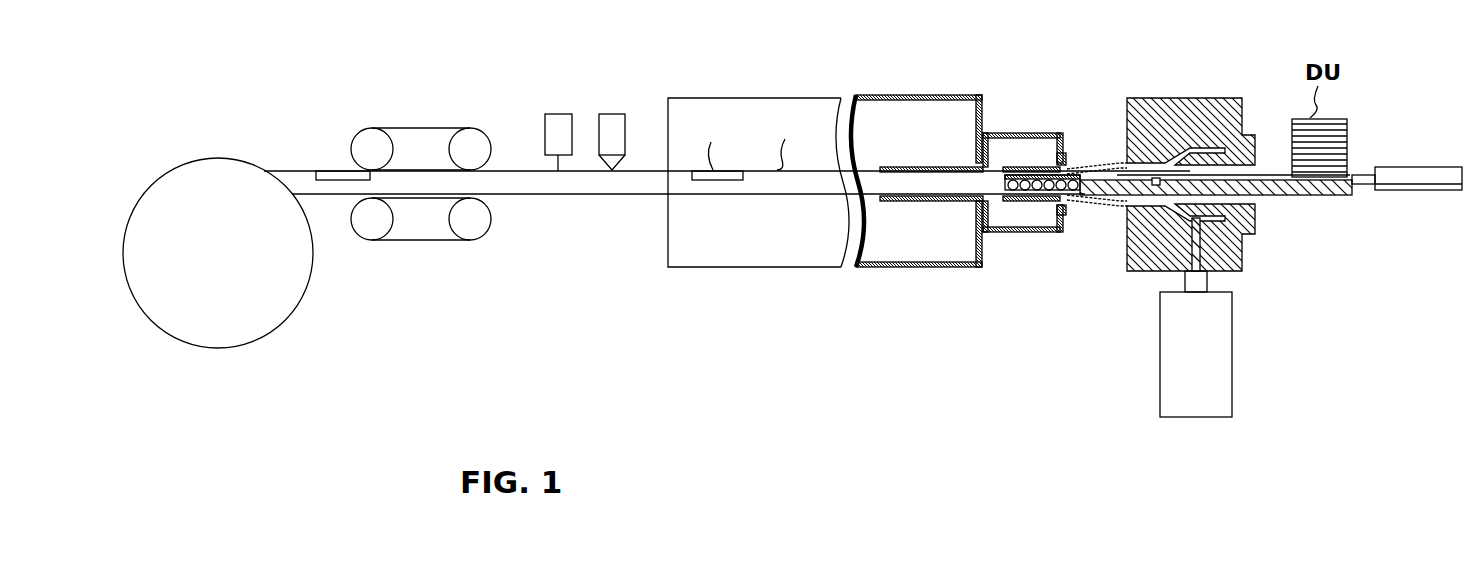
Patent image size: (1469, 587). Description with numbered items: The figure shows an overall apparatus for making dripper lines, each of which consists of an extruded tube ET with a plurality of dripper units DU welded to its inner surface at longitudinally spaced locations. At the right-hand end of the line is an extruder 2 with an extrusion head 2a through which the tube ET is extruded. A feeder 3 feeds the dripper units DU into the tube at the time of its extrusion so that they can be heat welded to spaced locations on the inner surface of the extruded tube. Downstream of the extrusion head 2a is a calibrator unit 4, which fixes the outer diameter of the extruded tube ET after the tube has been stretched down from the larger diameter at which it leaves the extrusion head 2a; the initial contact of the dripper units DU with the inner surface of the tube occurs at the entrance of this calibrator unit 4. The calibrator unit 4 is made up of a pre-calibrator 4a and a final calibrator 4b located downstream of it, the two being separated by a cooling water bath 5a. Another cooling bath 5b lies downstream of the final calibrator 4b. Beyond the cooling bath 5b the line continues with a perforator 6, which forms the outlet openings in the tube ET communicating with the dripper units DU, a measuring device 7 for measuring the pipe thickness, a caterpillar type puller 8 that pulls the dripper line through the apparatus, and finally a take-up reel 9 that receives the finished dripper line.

The extruder 2 is at (1232, 352).
The extrusion head 2a is at (1212, 98).
The feeder 3 is at (1430, 191).
The calibrator unit 4 is at (978, 144).
The pre-calibrator 4a is at (1067, 152).
The final calibrator 4b is at (987, 147).
The cooling water bath 5a is at (998, 215).
The cooling bath 5b is at (782, 98).
The perforator 6 is at (615, 113).
The measuring device 7 is at (560, 113).
The caterpillar type puller 8 is at (430, 127).
The take-up reel 9 is at (217, 158).